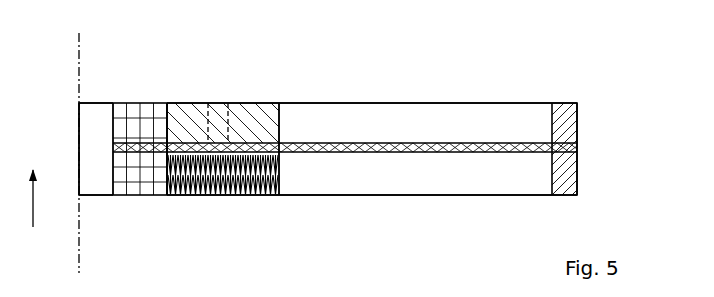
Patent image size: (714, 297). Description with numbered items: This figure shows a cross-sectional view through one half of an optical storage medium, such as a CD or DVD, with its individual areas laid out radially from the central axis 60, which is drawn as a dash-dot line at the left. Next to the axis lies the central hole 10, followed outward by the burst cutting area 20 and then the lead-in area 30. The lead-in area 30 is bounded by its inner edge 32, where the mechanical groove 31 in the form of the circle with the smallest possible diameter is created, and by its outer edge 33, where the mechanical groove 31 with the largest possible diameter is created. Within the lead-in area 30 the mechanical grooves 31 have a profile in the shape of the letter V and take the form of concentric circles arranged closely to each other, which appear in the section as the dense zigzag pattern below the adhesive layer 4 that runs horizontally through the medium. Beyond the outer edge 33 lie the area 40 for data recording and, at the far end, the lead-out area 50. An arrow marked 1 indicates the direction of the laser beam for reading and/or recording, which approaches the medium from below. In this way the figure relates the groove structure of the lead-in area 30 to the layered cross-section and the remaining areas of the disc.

The direction of laser beam 1 is at (43, 198).
The adhesive layer 4 is at (582, 148).
The central hole 10 is at (96, 135).
The burst cutting area 20 is at (140, 135).
The lead-in area 30 is at (219, 135).
The mechanical grooves 31 is at (266, 205).
The inner edge of the lead-in area 32 is at (166, 99).
The outer edge of the lead-in area 33 is at (281, 99).
The area for data recording 40 is at (415, 135).
The lead-out area 50 is at (568, 135).
The central axis 60 is at (95, 153).